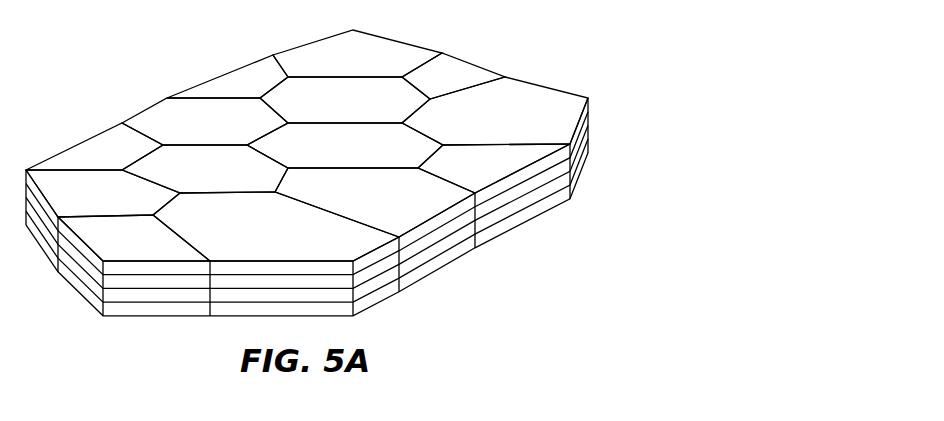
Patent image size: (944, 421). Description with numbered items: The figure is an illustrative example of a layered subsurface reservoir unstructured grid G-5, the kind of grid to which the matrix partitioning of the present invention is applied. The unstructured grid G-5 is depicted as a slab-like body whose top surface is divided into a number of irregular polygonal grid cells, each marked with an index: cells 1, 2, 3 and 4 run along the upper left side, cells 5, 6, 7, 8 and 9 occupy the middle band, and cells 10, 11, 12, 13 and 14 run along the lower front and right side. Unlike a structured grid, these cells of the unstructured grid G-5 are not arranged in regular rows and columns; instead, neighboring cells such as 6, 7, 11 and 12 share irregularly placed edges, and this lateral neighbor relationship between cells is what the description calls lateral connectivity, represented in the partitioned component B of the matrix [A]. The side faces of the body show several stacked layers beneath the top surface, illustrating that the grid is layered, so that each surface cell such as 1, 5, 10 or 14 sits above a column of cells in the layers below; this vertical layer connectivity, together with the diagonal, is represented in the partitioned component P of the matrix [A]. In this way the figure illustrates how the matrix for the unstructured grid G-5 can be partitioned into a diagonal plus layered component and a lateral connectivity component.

The unstructured grid G-5 is at (482, 37).
The gasket cell region 1 is at (94, 146).
The gasket cell region 2 is at (205, 121).
The gasket cell region 3 is at (227, 76).
The gasket cell region 4 is at (357, 53).
The gasket cell region 5 is at (103, 193).
The gasket cell region 6 is at (205, 169).
The gasket cell region 7 is at (345, 145).
The gasket cell region 8 is at (345, 100).
The gasket cell region 9 is at (453, 76).
The gasket cell region 10 is at (134, 238).
The gasket cell region 11 is at (276, 226).
The gasket cell region 12 is at (375, 202).
The gasket cell region 13 is at (494, 168).
The gasket cell region 14 is at (495, 111).